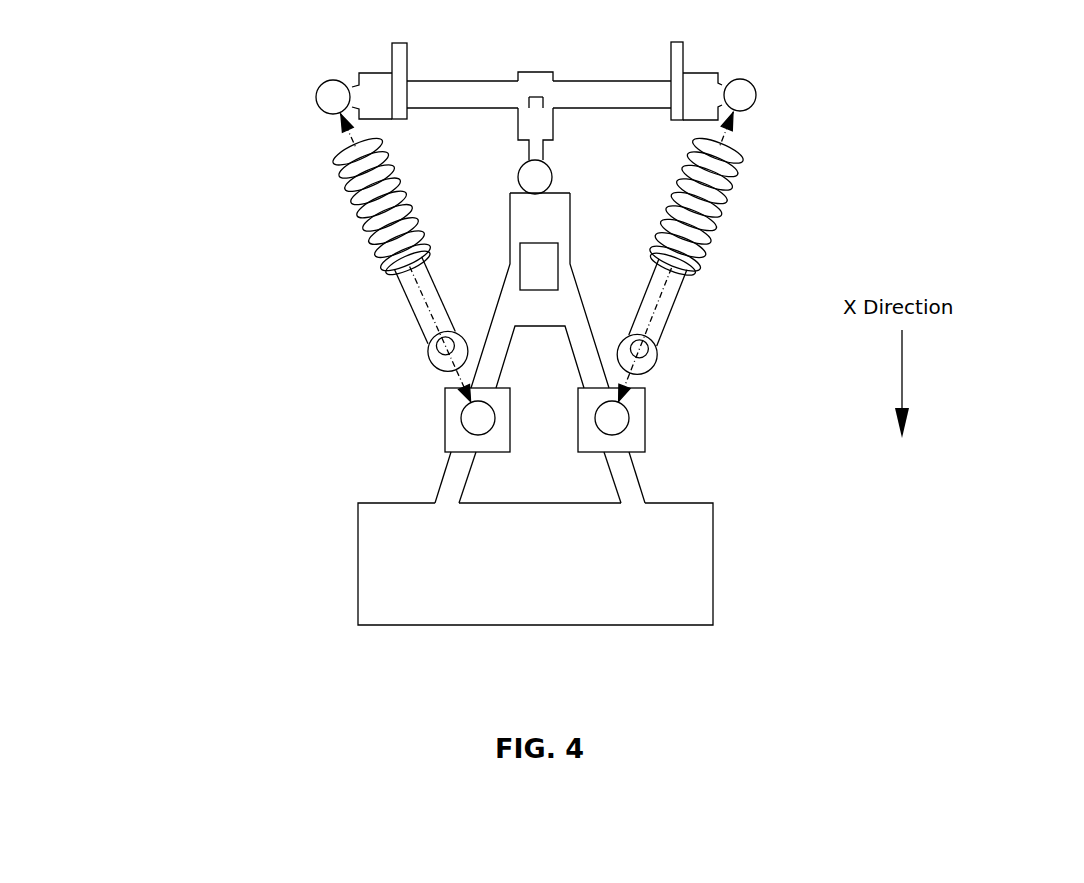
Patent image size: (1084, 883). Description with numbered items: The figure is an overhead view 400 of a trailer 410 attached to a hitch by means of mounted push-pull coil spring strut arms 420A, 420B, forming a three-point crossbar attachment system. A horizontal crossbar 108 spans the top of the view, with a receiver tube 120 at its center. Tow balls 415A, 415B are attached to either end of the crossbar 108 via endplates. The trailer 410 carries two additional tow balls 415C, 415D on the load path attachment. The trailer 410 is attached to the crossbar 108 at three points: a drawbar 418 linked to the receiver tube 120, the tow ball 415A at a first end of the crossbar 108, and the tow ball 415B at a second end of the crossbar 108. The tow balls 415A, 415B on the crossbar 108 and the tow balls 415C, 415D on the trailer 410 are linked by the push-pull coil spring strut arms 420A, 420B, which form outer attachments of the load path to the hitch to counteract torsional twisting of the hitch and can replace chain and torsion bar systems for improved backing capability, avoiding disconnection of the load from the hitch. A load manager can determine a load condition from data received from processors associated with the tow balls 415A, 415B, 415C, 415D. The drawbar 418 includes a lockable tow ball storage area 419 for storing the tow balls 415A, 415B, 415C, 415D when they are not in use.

The overhead view 400 is at (456, 320).
The crossbar 108 is at (537, 67).
The receiver tube 120 is at (572, 112).
The tow ball 415A is at (301, 91).
The tow ball 415B is at (776, 93).
The tow ball 415C is at (421, 420).
The tow ball 415D is at (668, 420).
The drawbar 418 is at (541, 313).
The lockable tow ball storage area 419 is at (501, 247).
The push-pull coil spring strut arm 420A is at (356, 257).
The push-pull coil spring strut arm 420B is at (724, 257).
The trailer 410 is at (596, 564).